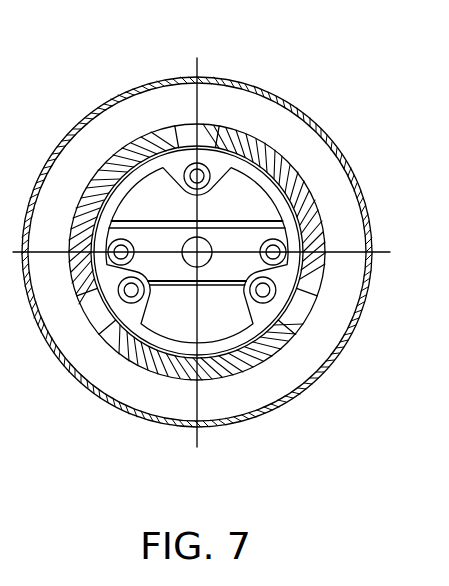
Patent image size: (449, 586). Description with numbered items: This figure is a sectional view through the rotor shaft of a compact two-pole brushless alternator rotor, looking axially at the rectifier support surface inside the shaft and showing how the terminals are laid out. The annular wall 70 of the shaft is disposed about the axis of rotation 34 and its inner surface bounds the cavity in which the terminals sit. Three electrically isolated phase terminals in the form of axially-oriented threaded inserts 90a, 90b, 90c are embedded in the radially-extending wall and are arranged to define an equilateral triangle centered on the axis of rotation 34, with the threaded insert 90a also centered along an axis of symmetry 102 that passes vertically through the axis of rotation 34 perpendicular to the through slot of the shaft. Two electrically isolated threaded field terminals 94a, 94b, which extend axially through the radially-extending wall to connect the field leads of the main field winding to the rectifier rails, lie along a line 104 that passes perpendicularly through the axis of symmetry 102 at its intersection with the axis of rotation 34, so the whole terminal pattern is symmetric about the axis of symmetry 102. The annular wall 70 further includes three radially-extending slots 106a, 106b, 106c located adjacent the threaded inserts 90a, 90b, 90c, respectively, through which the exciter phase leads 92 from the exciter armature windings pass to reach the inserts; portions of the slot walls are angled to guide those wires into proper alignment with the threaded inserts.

The axis of rotation 34 is at (212, 250).
The annular wall 70 is at (295, 163).
The threaded insert 90a is at (185, 168).
The threaded insert 90b is at (254, 308).
The threaded insert 90c is at (127, 300).
The phase leads 92 is at (235, 252).
The field terminal 94a is at (286, 248).
The field terminal 94b is at (108, 248).
The axis of symmetry 102 is at (199, 60).
The line 104 is at (389, 254).
The radially-extending slot 106a is at (207, 133).
The radially-extending slot 106b is at (296, 321).
The radially-extending slot 106c is at (100, 320).